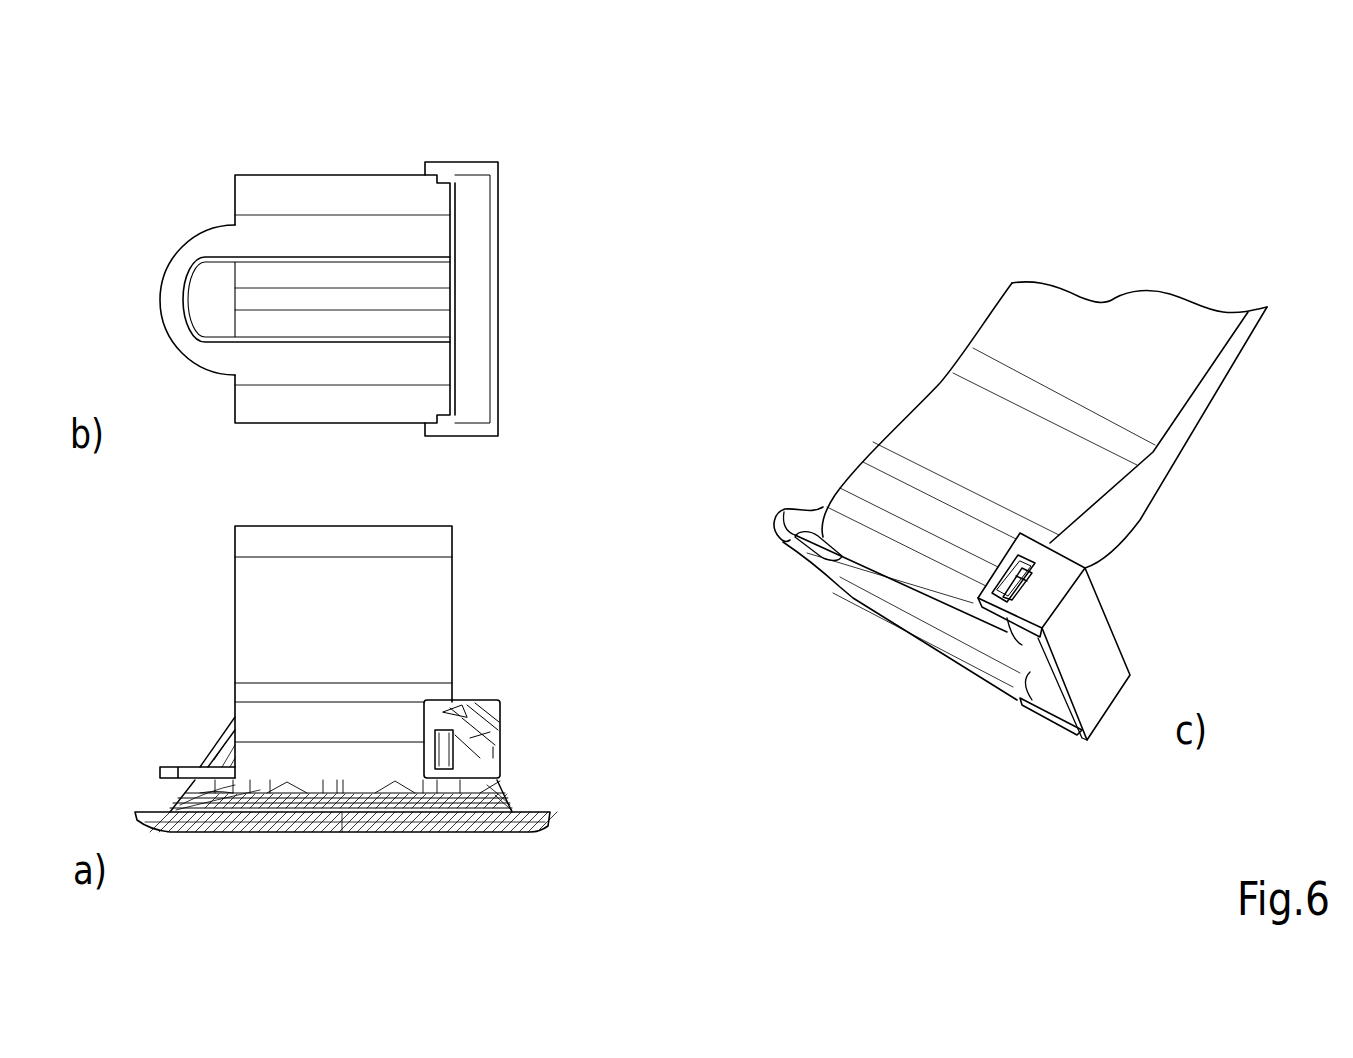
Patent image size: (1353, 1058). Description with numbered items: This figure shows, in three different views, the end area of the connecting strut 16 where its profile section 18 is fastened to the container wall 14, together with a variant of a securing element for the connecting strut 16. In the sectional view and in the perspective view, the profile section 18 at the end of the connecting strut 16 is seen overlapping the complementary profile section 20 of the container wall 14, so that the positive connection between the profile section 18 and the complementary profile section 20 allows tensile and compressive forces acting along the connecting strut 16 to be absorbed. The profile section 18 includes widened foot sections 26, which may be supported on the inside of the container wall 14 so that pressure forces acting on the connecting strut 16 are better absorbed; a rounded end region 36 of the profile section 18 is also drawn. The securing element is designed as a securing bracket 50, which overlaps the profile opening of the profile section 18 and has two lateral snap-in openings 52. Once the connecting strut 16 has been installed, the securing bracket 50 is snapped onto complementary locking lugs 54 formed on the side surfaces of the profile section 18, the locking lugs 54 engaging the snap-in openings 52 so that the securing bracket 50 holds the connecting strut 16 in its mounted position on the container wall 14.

The container wall 14 is at (530, 812).
The connecting strut 16 is at (338, 542).
The profile section 18 is at (338, 142).
The complementary profile section 20 is at (460, 735).
The widened foot section 26 is at (270, 230).
The rounded nose section 36 is at (172, 298).
The securing bracket 50 is at (475, 200).
The snap-in opening 52 is at (445, 714).
The locking lug 54 is at (442, 748).